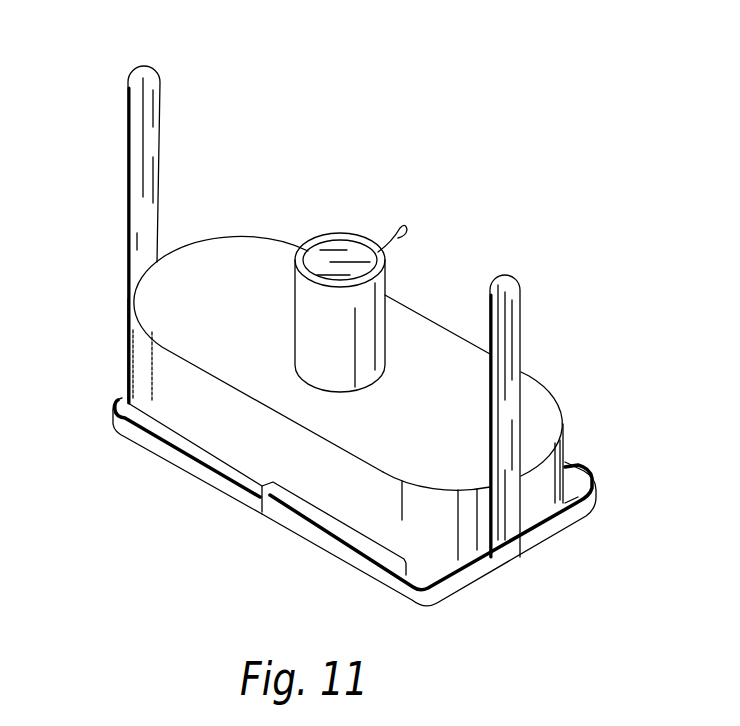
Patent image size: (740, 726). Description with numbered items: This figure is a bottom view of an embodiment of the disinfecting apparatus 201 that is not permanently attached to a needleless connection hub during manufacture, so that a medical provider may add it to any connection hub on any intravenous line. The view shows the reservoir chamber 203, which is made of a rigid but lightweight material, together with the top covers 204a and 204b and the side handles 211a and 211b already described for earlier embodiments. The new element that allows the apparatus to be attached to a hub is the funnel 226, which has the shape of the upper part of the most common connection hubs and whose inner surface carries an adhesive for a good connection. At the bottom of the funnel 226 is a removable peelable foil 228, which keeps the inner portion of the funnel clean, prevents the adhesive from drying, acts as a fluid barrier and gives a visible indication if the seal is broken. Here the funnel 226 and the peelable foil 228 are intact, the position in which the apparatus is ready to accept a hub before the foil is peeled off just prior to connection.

The disinfecting apparatus 201 is at (468, 166).
The reservoir chamber 203 is at (226, 277).
The top cover 204a is at (327, 542).
The top cover 204b is at (177, 458).
The side handle 211a is at (510, 333).
The side handle 211b is at (138, 172).
The funnel 226 is at (337, 325).
The peelable foil 228 is at (343, 258).